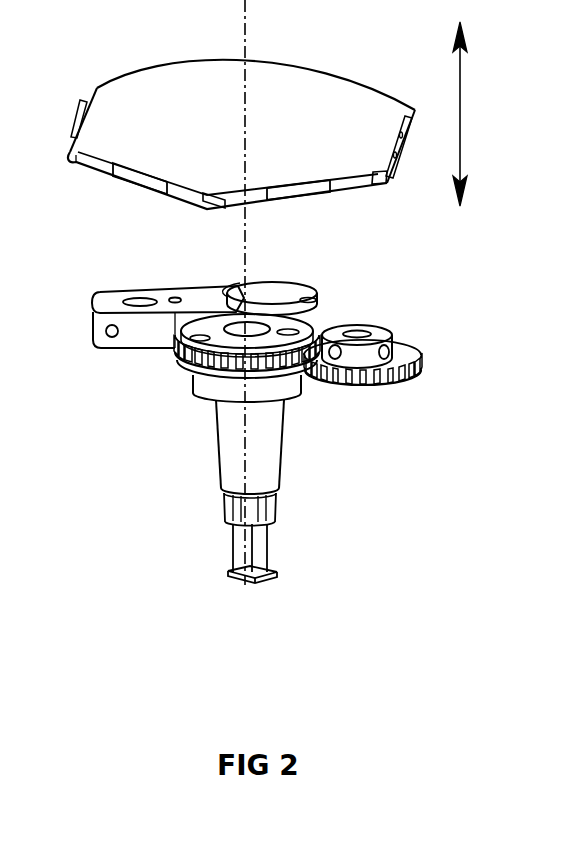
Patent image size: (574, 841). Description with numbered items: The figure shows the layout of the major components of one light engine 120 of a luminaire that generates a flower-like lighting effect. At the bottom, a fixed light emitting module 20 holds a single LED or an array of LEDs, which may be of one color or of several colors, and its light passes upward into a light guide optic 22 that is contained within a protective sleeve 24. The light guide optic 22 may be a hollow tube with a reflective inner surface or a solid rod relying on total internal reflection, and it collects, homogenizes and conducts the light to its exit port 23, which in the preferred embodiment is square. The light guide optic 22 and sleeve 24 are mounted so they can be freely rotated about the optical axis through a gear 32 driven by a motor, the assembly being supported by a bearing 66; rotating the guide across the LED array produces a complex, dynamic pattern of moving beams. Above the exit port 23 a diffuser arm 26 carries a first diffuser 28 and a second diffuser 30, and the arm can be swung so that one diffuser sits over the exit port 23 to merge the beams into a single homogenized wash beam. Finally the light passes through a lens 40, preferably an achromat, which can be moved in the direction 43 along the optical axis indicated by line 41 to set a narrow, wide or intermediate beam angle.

The light emitting module 20 is at (228, 571).
The light guide optic 22 is at (263, 548).
The exit port 23 is at (188, 371).
The protective sleeve 24 is at (263, 470).
The diffuser arm 26 is at (102, 299).
The first diffuser 28 is at (240, 287).
The second diffuser 30 is at (320, 300).
The gear 32 is at (421, 368).
The lens 40 is at (147, 102).
The line 41 is at (245, 38).
The direction 43 is at (473, 114).
The bearing 66 is at (207, 386).
The light engine 120 is at (338, 618).